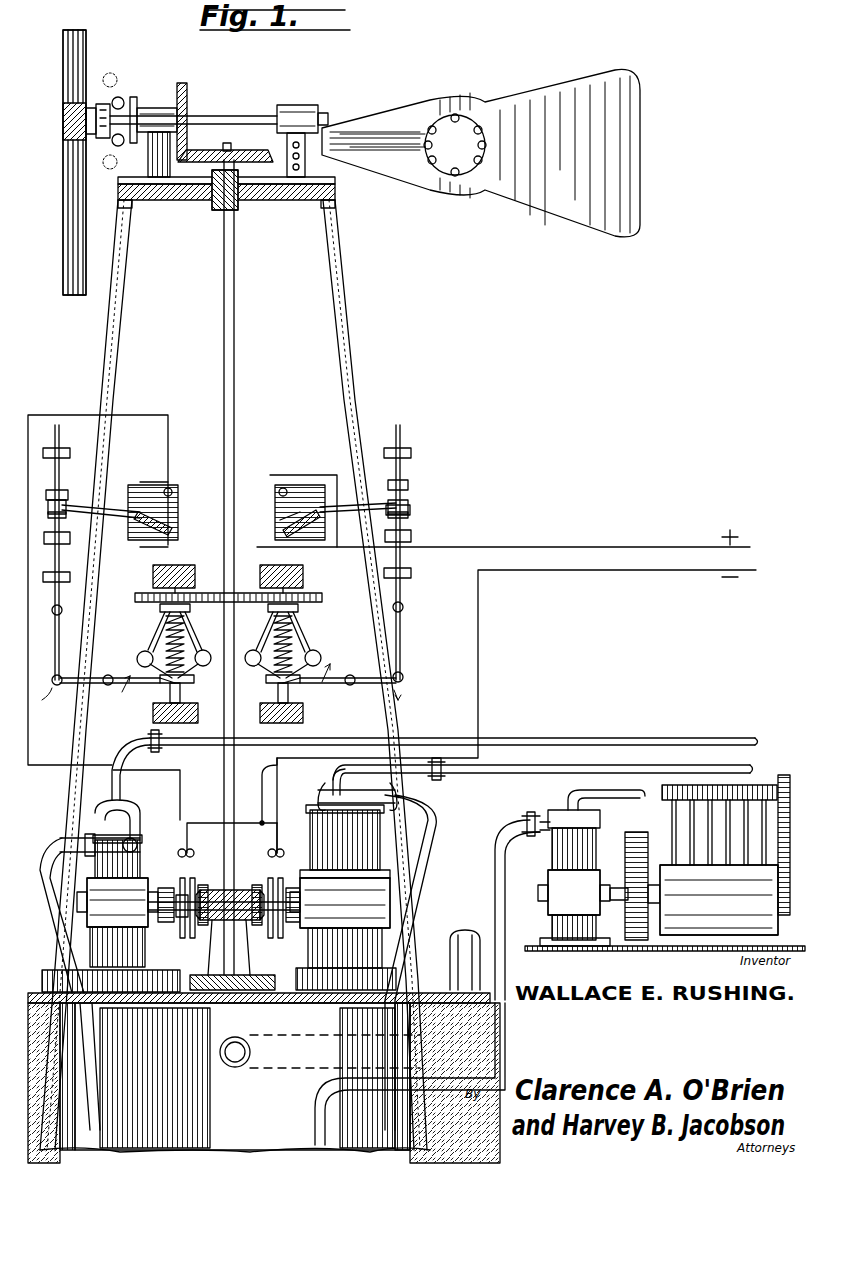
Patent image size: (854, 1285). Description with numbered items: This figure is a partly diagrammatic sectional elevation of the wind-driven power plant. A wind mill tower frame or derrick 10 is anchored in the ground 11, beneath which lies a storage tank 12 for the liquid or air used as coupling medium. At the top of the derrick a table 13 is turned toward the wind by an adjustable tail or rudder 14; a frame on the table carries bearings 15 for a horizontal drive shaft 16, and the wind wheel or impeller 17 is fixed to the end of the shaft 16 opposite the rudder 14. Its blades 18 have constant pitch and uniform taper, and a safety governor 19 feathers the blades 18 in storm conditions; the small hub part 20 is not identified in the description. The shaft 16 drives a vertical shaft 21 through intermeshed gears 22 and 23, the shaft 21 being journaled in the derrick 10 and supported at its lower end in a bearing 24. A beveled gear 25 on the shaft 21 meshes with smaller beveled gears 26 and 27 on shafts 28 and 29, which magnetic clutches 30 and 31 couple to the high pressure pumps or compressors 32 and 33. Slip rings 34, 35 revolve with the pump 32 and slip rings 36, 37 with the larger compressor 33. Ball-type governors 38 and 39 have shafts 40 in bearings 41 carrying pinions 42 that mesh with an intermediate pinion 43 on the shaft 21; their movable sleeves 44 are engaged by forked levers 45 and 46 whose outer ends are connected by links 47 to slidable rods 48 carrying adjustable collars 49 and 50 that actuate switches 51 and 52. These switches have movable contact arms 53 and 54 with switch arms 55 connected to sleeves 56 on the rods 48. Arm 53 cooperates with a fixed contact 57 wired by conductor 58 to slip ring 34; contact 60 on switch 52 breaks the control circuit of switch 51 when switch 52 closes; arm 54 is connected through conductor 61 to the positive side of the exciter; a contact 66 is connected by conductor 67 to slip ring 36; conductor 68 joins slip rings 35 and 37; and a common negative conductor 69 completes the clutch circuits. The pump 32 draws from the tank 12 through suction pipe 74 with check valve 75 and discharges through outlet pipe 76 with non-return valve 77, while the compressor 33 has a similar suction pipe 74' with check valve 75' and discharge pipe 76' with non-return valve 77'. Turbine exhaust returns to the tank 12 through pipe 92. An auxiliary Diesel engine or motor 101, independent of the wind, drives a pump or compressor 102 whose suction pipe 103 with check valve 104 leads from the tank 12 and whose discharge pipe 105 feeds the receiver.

The wind mill tower frame or derrick 10 is at (348, 330).
The ground 11 is at (442, 993).
The storage tank 12 is at (255, 1092).
The table 13 is at (335, 186).
The tail or rudder 14 is at (510, 100).
The bearings 15 is at (148, 114).
The horizontal drive shaft 16 is at (229, 117).
The wind wheel or impeller 17 is at (57, 164).
The blades 18 is at (66, 95).
The governor 19 is at (125, 99).
The hub 20 is at (100, 104).
The vertical shaft 21 is at (235, 332).
The gear 22 is at (186, 104).
The gear 23 is at (262, 158).
The bearing 24 is at (238, 936).
The beveled gear 25 is at (208, 927).
The beveled gear 26 is at (198, 888).
The beveled gear 27 is at (262, 888).
The shaft 28 is at (222, 870).
The shaft 29 is at (240, 870).
The clutch 30 is at (178, 853).
The clutch 31 is at (282, 857).
The pump or compressor 32 is at (111, 896).
The pump or compressor 33 is at (343, 897).
The slip ring 34 is at (165, 922).
The slip ring 35 is at (185, 920).
The slip ring 36 is at (292, 940).
The slip ring 37 is at (272, 922).
The governor 38 is at (145, 648).
The governor 39 is at (318, 645).
The governor shafts 40 is at (192, 574).
The bearings 41 is at (206, 580).
The pinions 42 is at (135, 597).
The intermediate pinion 43 is at (186, 621).
The movable sleeves 44 is at (188, 703).
The lever 45 is at (110, 697).
The lever 46 is at (306, 702).
The links 47 is at (52, 692).
The rods 48 is at (58, 540).
The switch-actuating collar 49 is at (58, 448).
The switch-actuating collar 50 is at (60, 516).
The switch 51 is at (155, 485).
The switch 52 is at (296, 485).
The movable contact arm 53 is at (166, 526).
The movable contact arm 54 is at (277, 516).
The switch arms 55 is at (113, 508).
The sleeves 56 is at (57, 500).
The fixed contact 57 is at (171, 490).
The conductor 58 is at (138, 415).
The contact 60 is at (281, 530).
The conductor 61 is at (502, 548).
The contact 66 is at (280, 492).
The conductor 67 is at (322, 483).
The conductor 68 is at (262, 810).
The conductor 69 is at (510, 572).
The inlet suction pipe 74 is at (97, 1002).
The inlet or suction pipe 74' is at (391, 979).
The check valve 75 is at (85, 837).
The check valve 75' is at (395, 784).
The discharge or outlet pipe 76 is at (454, 725).
The discharge pipe 76' is at (543, 766).
The check or non-return valve 77 is at (133, 759).
The check or non-return valve 77' is at (424, 760).
The pipe 92 is at (463, 930).
The auxiliary 101 is at (660, 898).
The pump or compressor 102 is at (574, 878).
The suction pipe 103 is at (505, 835).
The check valve or non-return valve 104 is at (522, 822).
The pipe 105 is at (618, 805).